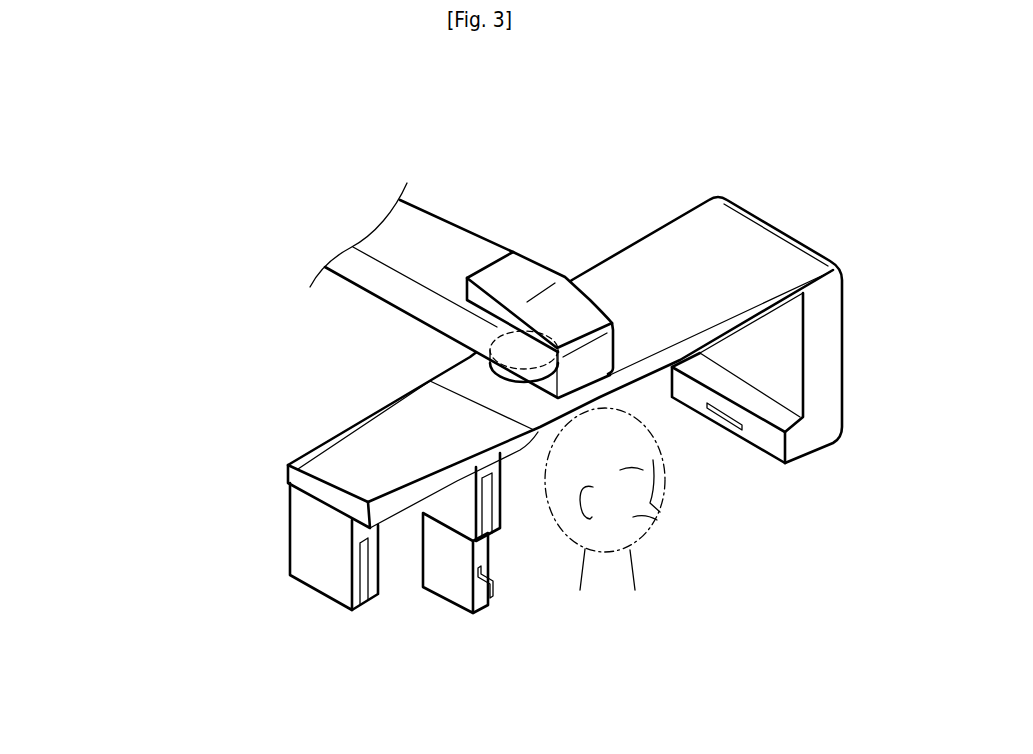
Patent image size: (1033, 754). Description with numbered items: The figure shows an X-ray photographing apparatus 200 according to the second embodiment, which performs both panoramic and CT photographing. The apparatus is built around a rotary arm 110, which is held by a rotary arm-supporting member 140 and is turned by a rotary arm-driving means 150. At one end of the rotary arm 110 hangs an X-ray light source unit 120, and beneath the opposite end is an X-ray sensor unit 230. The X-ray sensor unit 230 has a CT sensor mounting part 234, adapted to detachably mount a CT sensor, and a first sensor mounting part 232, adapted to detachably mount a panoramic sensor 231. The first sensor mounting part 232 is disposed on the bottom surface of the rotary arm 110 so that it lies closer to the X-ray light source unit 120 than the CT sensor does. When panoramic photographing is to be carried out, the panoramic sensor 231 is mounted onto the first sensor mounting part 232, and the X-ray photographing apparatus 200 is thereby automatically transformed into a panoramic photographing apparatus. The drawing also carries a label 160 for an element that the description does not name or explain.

The X-ray photographing apparatus 200 is at (480, 411).
The rotary arm 110 is at (650, 262).
The X-ray light source unit 120 is at (820, 421).
The rotary arm-supporting member 140 is at (429, 247).
The rotary arm-driving means 150 is at (522, 350).
The head of user 160 is at (657, 517).
The X-ray sensor unit 230 is at (451, 598).
The panoramic sensor 231 is at (481, 591).
The first sensor mounting part 232 is at (503, 520).
The CT sensor mounting part 234 is at (378, 578).